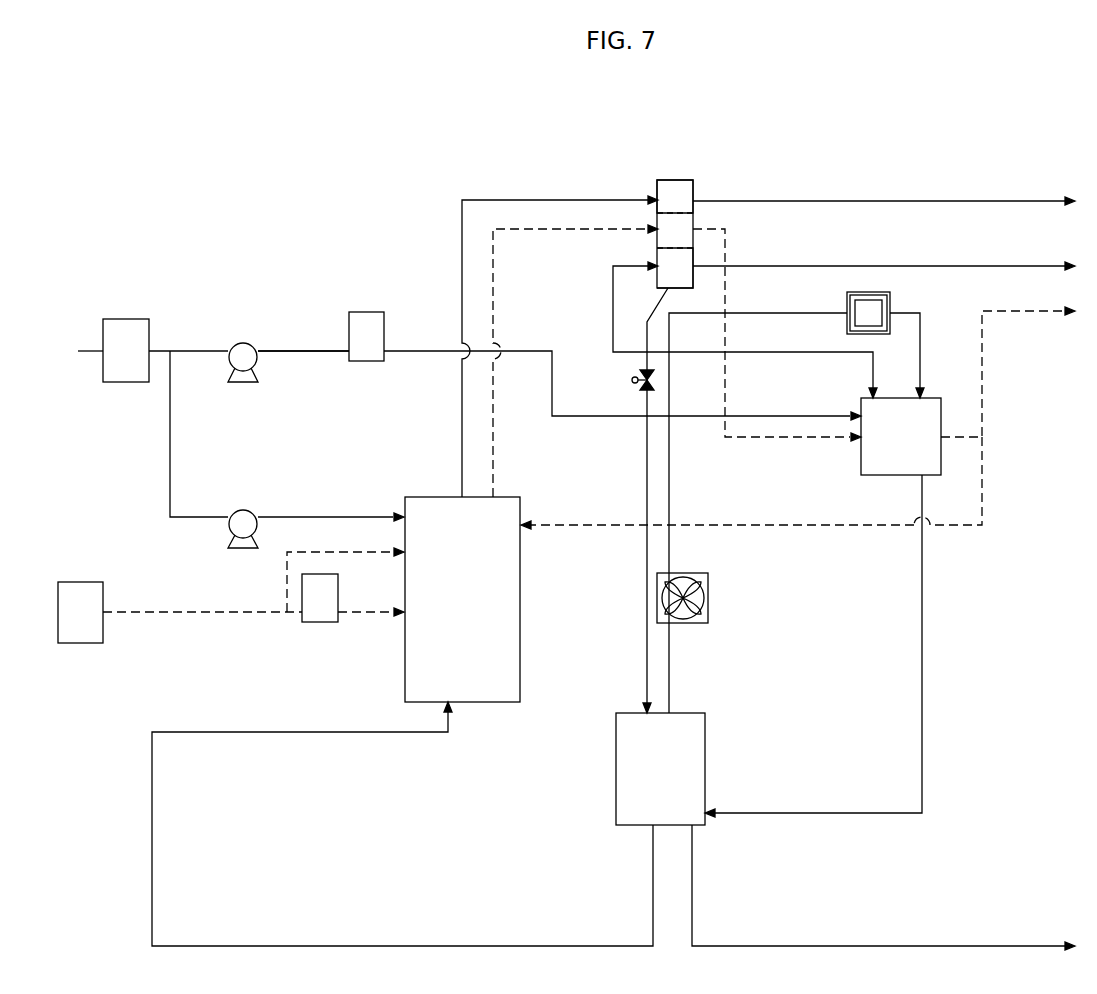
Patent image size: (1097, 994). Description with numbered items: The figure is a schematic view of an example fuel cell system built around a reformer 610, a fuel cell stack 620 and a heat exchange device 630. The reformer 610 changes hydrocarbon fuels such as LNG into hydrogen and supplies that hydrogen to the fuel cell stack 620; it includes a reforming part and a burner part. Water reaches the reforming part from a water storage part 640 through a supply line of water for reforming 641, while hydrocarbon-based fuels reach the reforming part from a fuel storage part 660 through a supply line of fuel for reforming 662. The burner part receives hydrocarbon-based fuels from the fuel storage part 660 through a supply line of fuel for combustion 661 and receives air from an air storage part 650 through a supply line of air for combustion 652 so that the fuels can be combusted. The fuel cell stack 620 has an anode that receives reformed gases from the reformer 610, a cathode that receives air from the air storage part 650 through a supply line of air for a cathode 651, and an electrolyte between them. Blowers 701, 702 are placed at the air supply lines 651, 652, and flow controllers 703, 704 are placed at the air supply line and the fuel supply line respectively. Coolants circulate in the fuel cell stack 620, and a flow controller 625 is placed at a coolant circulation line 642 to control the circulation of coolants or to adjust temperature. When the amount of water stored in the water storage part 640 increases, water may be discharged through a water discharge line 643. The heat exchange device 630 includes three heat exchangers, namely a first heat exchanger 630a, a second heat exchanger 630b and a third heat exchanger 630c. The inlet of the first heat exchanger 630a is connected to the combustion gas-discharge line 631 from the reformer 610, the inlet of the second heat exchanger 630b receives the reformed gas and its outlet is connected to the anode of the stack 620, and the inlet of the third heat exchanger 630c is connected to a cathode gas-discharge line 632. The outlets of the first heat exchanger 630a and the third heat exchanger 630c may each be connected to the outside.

The reformer 610 is at (521, 658).
The fuel cell stack 620 is at (861, 466).
The flow controller 625 is at (890, 300).
The heat exchange device 630 is at (647, 169).
The first heat exchanger 630a is at (688, 188).
The second heat exchanger 630b is at (665, 220).
The third heat exchanger 630c is at (665, 256).
The combustion gas-discharge line 631 is at (921, 201).
The cathode gas-discharge line 632 is at (904, 266).
The water storage part 640 is at (705, 755).
The supply line of water for reforming 641 is at (514, 946).
The coolant circulation line 642 is at (868, 811).
The water discharge line 643 is at (822, 946).
The air storage part 650 is at (125, 319).
The supply line of air for a cathode 651 is at (297, 350).
The supply line of air for combustion 652 is at (170, 453).
The fuel storage part 660 is at (81, 581).
The supply line of fuel for combustion 661 is at (351, 552).
The supply line of fuel for reforming 662 is at (380, 620).
The blower 701 is at (241, 385).
The blower 702 is at (242, 551).
The flow controller 703 is at (365, 312).
The flow controller 704 is at (318, 625).